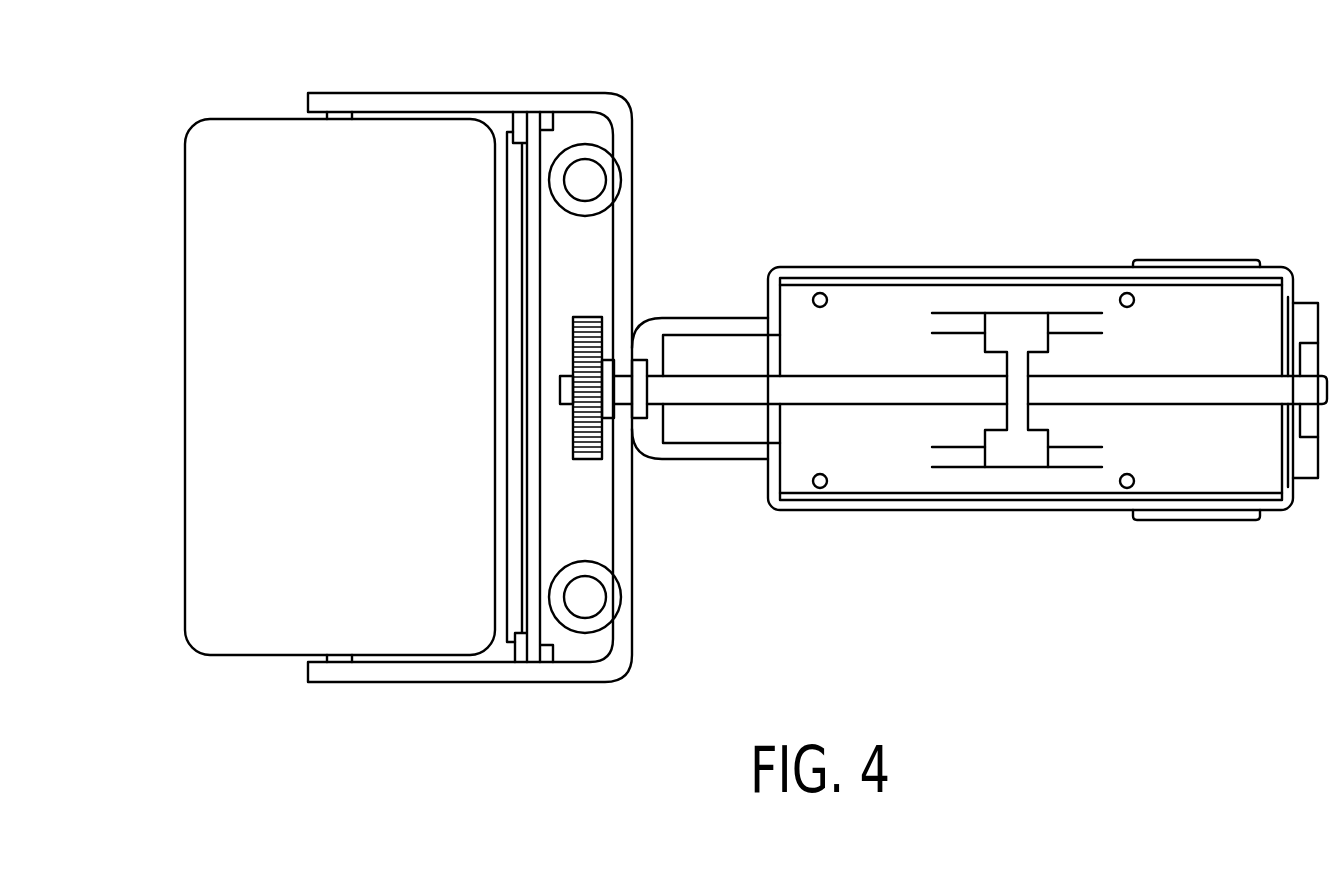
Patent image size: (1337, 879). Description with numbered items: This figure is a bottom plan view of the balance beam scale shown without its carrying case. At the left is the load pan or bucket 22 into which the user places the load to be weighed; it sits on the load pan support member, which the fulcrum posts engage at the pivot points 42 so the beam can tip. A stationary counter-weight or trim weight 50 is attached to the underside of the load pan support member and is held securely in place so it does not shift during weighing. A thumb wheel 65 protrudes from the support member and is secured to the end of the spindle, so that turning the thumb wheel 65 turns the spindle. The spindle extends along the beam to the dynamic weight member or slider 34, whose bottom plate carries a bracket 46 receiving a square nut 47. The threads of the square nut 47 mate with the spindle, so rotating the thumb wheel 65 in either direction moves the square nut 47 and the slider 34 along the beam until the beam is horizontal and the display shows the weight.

The load pan or bucket 22 is at (213, 260).
The dynamic weight member or slider 34 is at (1004, 258).
The pivot points 42 is at (597, 152).
The bracket 46 is at (1022, 322).
The square nut 47 is at (1017, 385).
The stationary counter-weight or trim weight 50 is at (527, 125).
The thumb wheel 65 is at (585, 443).